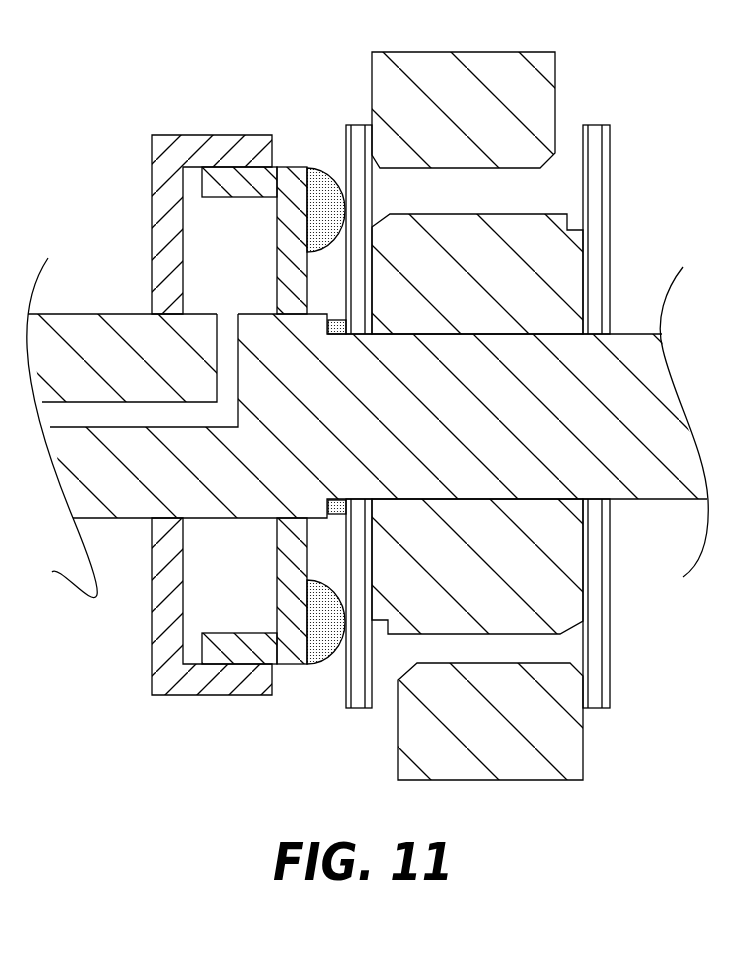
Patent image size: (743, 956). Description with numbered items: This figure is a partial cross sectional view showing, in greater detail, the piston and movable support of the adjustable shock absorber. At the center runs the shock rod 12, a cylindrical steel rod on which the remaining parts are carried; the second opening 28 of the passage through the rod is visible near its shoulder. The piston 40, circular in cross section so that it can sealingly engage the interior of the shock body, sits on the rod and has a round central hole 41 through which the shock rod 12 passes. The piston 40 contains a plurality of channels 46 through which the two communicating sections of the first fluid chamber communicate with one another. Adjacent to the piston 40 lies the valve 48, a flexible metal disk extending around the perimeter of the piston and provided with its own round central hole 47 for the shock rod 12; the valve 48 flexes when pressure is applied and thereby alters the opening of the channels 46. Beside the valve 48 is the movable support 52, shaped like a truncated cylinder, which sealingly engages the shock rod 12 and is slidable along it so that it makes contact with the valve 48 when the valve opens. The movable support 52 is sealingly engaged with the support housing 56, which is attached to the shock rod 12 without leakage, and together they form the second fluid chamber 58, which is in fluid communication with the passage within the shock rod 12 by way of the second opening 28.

The shock rod 12 is at (97, 508).
The second opening 28 is at (225, 320).
The piston 40 is at (548, 68).
The round central hole 41 is at (512, 345).
The channels 46 is at (453, 183).
The round central hole 47 is at (345, 500).
The valve 48 is at (357, 708).
The movable support 52 is at (295, 172).
The support housing 56 is at (180, 137).
The second fluid chamber 58 is at (235, 212).